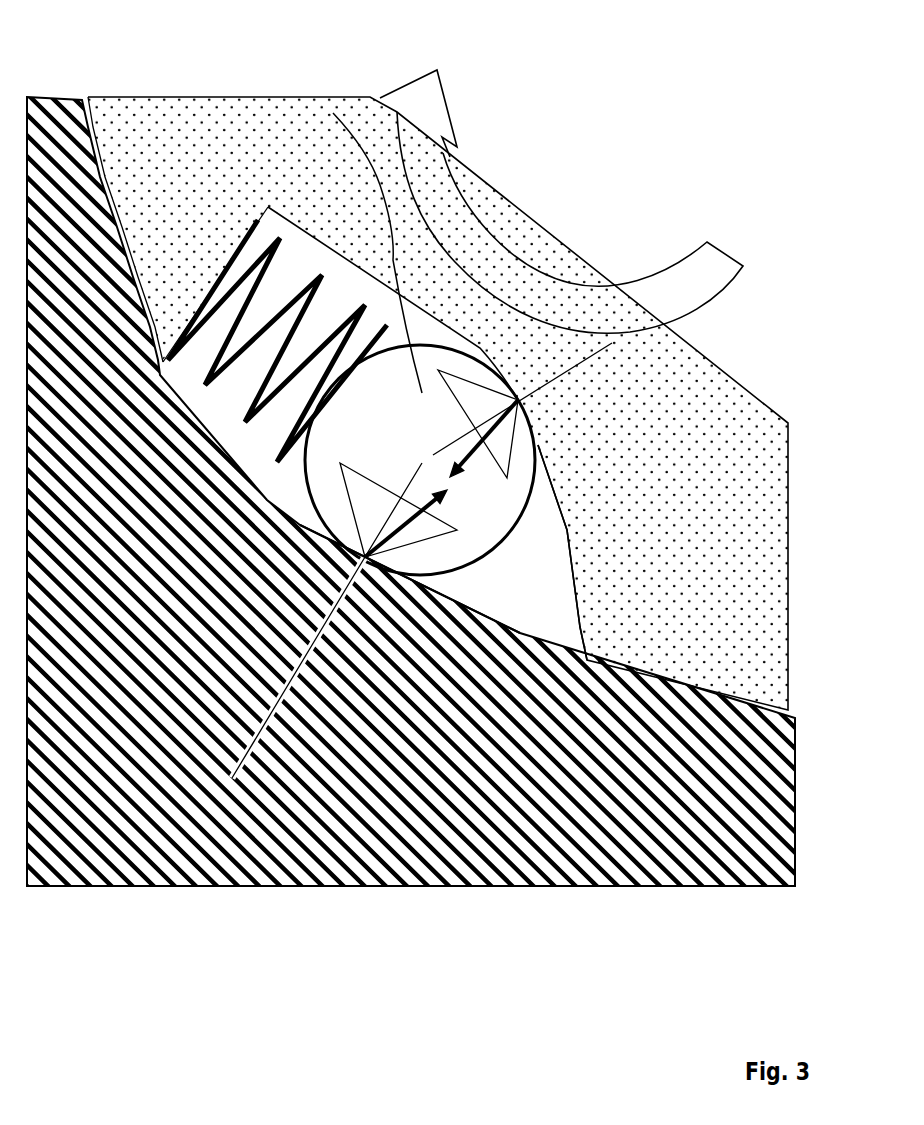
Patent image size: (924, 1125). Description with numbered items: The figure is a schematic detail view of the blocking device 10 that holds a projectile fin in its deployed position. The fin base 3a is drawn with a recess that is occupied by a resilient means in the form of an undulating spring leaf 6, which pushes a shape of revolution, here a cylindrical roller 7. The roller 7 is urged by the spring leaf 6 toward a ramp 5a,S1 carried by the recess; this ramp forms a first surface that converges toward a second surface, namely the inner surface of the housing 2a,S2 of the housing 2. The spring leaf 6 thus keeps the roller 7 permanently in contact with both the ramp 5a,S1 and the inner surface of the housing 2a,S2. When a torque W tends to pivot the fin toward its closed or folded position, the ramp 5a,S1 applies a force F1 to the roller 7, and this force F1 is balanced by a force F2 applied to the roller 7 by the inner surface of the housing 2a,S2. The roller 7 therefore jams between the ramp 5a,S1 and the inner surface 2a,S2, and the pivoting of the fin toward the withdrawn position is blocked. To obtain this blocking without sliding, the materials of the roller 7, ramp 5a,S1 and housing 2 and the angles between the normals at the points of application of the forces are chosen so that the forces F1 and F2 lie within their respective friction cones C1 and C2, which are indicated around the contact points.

The housing 2 is at (160, 762).
The inner surface of the housing (second surface) 2a,S2 is at (494, 604).
The fin base 3a is at (165, 178).
The ramp (first surface) 5a,S1 is at (567, 528).
The undulating spring leaf 6 is at (278, 236).
The cylindrical roller 7 is at (333, 113).
The blocking device 10 is at (541, 180).
The torque W is at (432, 97).
The force applied by the ramp on the roller F1 is at (503, 435).
The force applied by the housing inner surface on the roller F2 is at (425, 530).
The friction cone of force F1 C1 is at (507, 478).
The friction cone of force F2 C2 is at (450, 537).